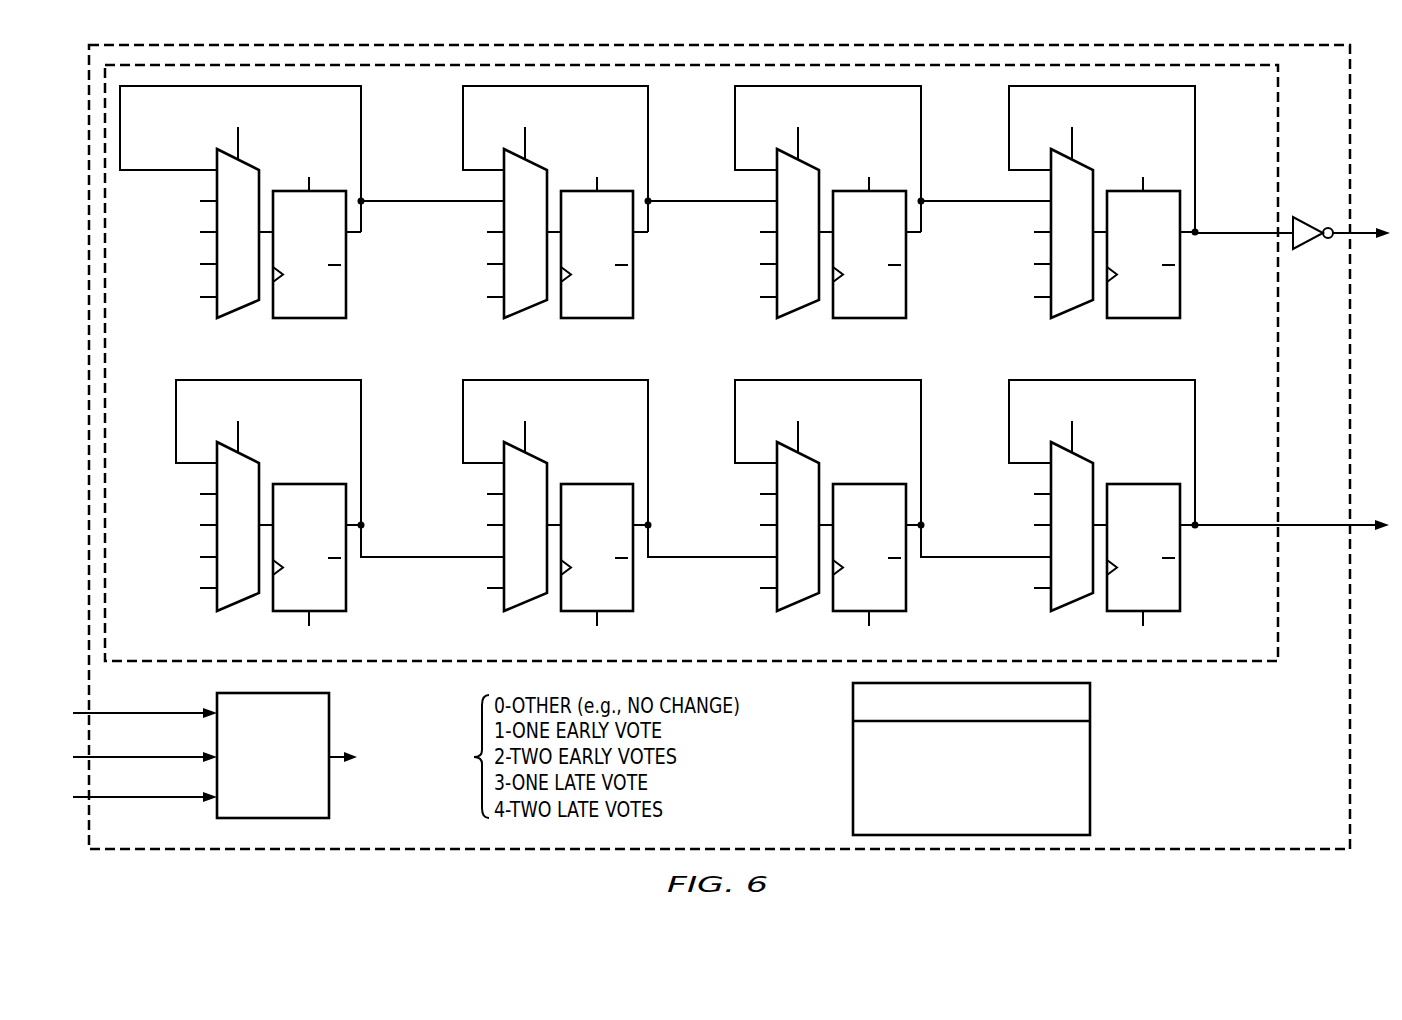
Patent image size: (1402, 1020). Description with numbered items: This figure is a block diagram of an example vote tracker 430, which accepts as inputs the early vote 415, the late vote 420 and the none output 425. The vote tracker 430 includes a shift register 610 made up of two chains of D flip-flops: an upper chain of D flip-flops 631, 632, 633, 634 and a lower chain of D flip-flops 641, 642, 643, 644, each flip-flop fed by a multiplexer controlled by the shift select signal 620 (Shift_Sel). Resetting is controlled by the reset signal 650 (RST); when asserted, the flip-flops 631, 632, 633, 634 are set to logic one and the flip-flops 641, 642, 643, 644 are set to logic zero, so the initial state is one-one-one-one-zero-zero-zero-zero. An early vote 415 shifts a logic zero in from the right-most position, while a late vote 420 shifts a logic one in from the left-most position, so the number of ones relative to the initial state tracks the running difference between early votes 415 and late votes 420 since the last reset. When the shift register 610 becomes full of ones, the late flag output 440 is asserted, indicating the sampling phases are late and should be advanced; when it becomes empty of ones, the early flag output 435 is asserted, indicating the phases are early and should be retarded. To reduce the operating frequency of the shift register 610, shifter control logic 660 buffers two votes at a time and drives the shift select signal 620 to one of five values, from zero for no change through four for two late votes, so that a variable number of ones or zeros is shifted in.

The vote tracker 430 is at (1237, 804).
The shift register 610 is at (1193, 661).
The shift select signal 620 is at (194, 108).
The reset signal 650 is at (1090, 778).
The D flip-flop 631 is at (1154, 318).
The D flip-flop 632 is at (880, 318).
The D flip-flop 633 is at (607, 318).
The D flip-flop 634 is at (320, 318).
The D flip-flop 641 is at (318, 484).
The D flip-flop 642 is at (606, 484).
The D flip-flop 643 is at (879, 484).
The D flip-flop 644 is at (1152, 484).
The early flag output 435 is at (1368, 232).
The late flag output 440 is at (1300, 528).
The shifter control logic 660 is at (331, 725).
The early vote 415 is at (193, 710).
The late vote 420 is at (193, 760).
The none output 425 is at (193, 800).